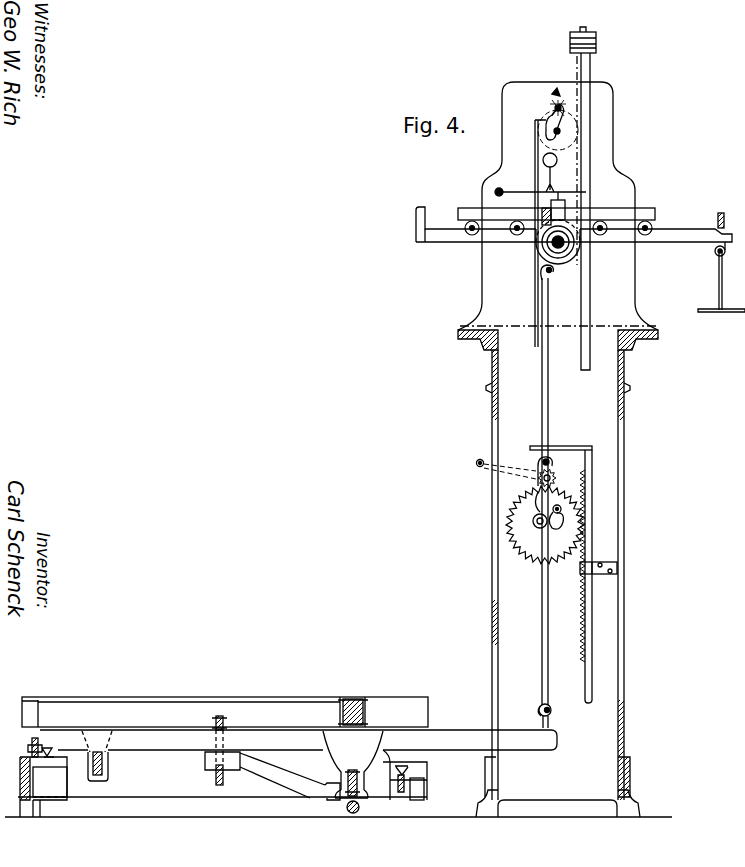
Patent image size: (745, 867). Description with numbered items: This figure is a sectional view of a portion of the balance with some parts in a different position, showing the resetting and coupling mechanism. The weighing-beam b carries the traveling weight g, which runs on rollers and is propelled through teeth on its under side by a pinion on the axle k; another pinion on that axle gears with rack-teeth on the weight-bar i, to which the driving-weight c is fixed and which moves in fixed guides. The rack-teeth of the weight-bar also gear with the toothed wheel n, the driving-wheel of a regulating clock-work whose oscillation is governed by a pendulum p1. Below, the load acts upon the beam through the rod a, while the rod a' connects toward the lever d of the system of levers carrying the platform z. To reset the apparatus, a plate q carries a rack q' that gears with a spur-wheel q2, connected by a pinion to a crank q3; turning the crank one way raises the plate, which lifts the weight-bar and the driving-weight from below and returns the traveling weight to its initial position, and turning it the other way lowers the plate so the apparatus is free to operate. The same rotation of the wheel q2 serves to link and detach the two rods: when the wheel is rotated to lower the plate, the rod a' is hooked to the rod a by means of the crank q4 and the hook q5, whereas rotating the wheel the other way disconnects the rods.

The driving-weight c is at (587, 40).
The weight-bar i is at (585, 211).
The toothed wheel n is at (540, 142).
The pendulum p1 is at (533, 233).
The traveling weight g is at (556, 213).
The weighing-beam b is at (580, 259).
The axle k is at (555, 279).
The rod a is at (550, 491).
The rod a' is at (551, 676).
The plate q is at (554, 471).
The rack q' is at (573, 574).
The spur-wheel q2 is at (507, 520).
The crank q3 is at (497, 468).
The crank q4 is at (535, 510).
The hook q5 is at (562, 524).
The platform z is at (225, 705).
The lever d is at (287, 766).